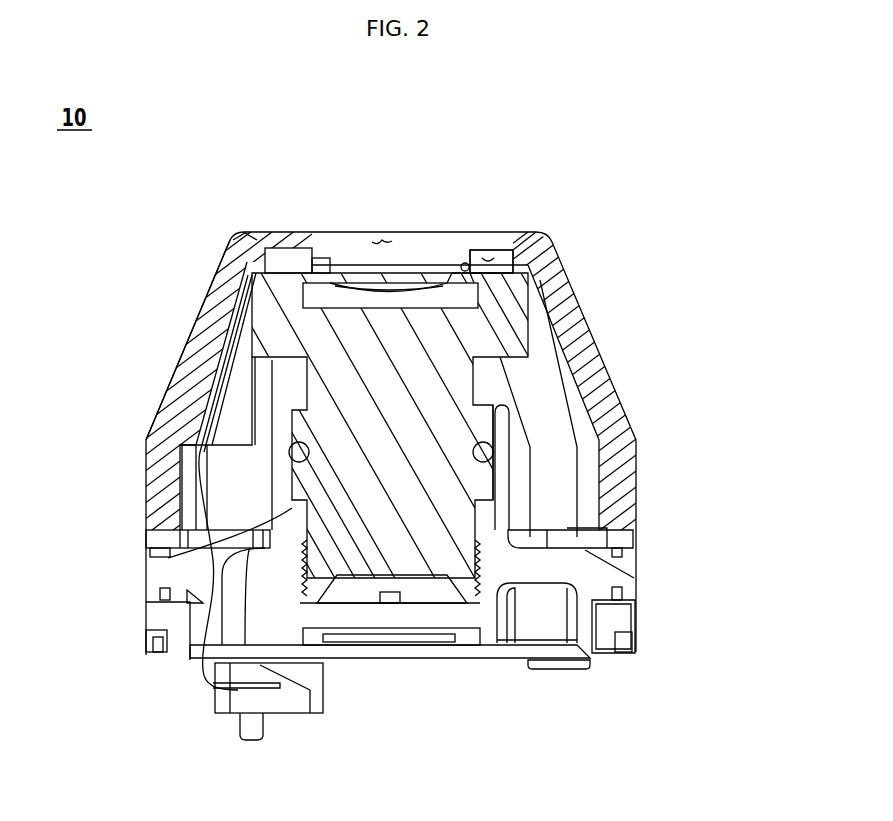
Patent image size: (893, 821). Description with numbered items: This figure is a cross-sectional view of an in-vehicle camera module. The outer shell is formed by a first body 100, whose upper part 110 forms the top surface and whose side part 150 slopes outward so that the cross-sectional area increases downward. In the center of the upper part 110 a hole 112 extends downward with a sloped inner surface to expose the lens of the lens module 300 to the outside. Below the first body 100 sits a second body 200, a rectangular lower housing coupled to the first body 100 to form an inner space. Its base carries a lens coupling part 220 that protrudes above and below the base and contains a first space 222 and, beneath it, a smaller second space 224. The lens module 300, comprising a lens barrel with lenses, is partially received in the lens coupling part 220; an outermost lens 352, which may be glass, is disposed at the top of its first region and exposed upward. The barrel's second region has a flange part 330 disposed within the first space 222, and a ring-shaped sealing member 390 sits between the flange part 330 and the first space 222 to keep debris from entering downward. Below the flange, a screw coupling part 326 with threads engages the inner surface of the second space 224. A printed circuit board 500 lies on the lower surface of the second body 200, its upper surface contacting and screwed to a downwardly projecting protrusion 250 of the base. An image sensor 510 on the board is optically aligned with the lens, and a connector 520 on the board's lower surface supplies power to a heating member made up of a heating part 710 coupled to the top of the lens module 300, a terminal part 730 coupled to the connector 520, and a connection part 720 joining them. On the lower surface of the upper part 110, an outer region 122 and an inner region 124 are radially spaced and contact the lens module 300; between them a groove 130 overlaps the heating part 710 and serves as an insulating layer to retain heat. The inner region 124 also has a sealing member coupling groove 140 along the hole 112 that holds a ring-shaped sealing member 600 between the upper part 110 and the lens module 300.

The first body 100 is at (614, 346).
The upper part 110 is at (487, 235).
The hole 112 is at (378, 232).
The outer region 122 is at (535, 265).
The inner region 124 is at (462, 262).
The groove 130 is at (500, 268).
The sealing member coupling groove 140 is at (318, 248).
The side part 150 is at (205, 330).
The second body 200 is at (646, 575).
The lens coupling part 220 is at (605, 413).
The first space 222 is at (238, 389).
The second space 224 is at (168, 558).
The protrusion 250 is at (583, 626).
The lens module 300 is at (537, 337).
The screw coupling part 326 is at (478, 582).
The flange part 330 is at (498, 483).
The outermost lens 352 is at (472, 302).
The sealing member 390 is at (487, 452).
The printed circuit board 500 is at (464, 660).
The image sensor 510 is at (388, 640).
The connector 520 is at (280, 700).
The sealing member 600 is at (445, 262).
The heating part 710 is at (240, 238).
The connection part 720 is at (195, 463).
The terminal part 730 is at (240, 690).